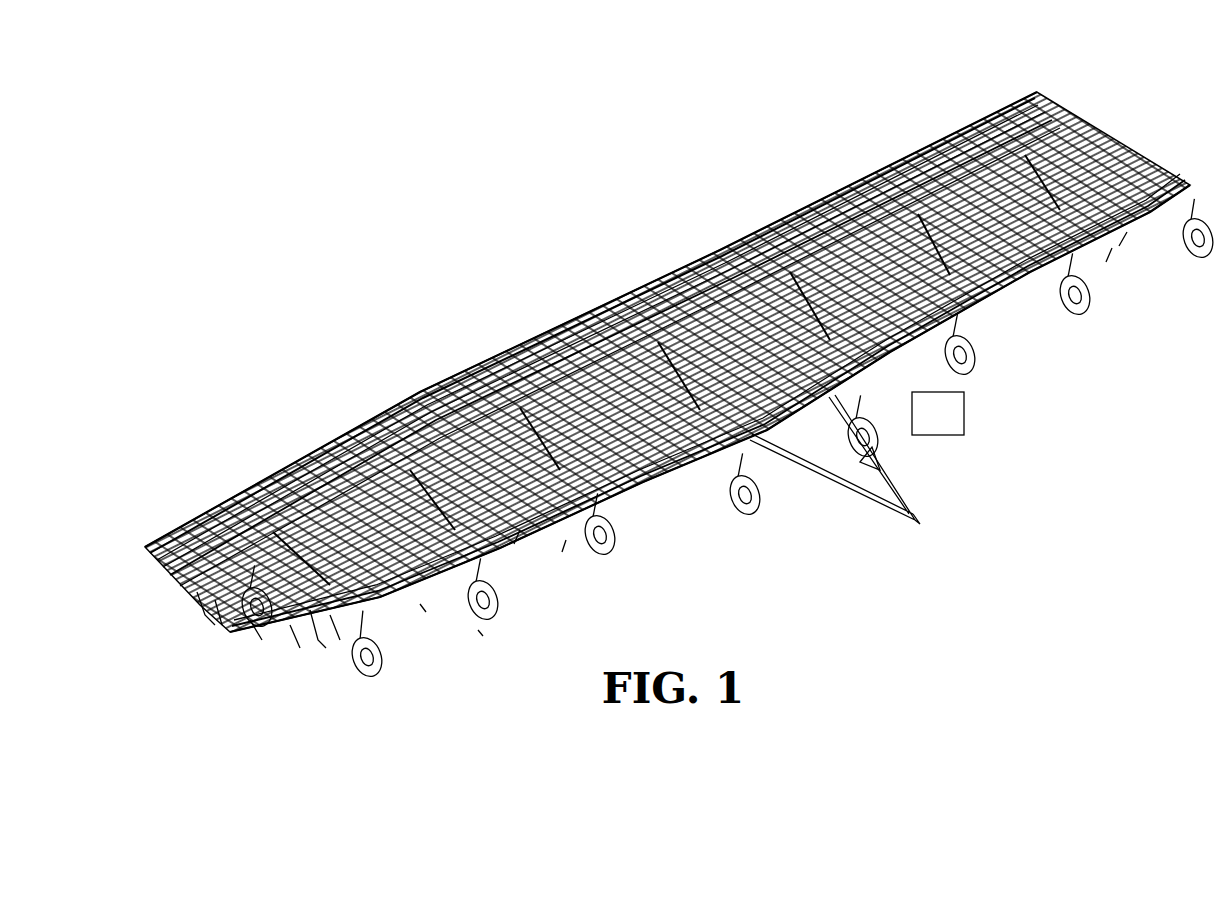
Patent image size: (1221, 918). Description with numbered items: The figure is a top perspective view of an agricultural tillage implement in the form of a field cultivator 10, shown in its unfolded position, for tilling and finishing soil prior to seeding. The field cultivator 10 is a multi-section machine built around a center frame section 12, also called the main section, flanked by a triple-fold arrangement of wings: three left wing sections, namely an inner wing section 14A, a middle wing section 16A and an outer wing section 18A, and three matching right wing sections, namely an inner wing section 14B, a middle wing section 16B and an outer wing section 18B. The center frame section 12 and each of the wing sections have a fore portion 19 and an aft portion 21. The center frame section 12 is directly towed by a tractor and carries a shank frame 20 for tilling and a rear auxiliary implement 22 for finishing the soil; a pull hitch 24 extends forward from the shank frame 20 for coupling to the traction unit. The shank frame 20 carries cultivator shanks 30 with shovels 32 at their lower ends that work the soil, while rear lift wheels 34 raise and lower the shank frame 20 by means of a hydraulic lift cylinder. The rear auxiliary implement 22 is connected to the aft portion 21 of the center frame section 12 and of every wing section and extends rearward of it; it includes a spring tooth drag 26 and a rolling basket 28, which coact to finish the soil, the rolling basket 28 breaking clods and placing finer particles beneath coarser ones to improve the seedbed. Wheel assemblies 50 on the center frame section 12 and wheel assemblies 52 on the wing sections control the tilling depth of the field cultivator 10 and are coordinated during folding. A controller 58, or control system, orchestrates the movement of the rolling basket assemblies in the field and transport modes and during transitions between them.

The field cultivator 10 is at (555, 175).
The center frame section 12 is at (658, 250).
The inner wing section 14A is at (748, 225).
The inner wing section 14B is at (517, 348).
The middle wing section 16A is at (870, 158).
The middle wing section 16B is at (345, 430).
The outer wing section 18A is at (976, 102).
The outer wing section 18B is at (195, 512).
The fore portion 19 is at (1150, 212).
The shank frame 20 is at (1166, 168).
The aft portion 21 is at (273, 532).
The rear auxiliary implement 22 is at (945, 140).
The pull hitch 24 is at (893, 485).
The spring tooth drag 26 is at (198, 592).
The rolling basket 28 is at (1002, 105).
The cultivator shank 30 is at (1133, 240).
The shovel 32 is at (1112, 248).
The rear lift wheel 34 is at (257, 620).
The wheel assembly 50 is at (703, 243).
The wheel assembly 52 is at (420, 604).
The controller 58 is at (887, 462).